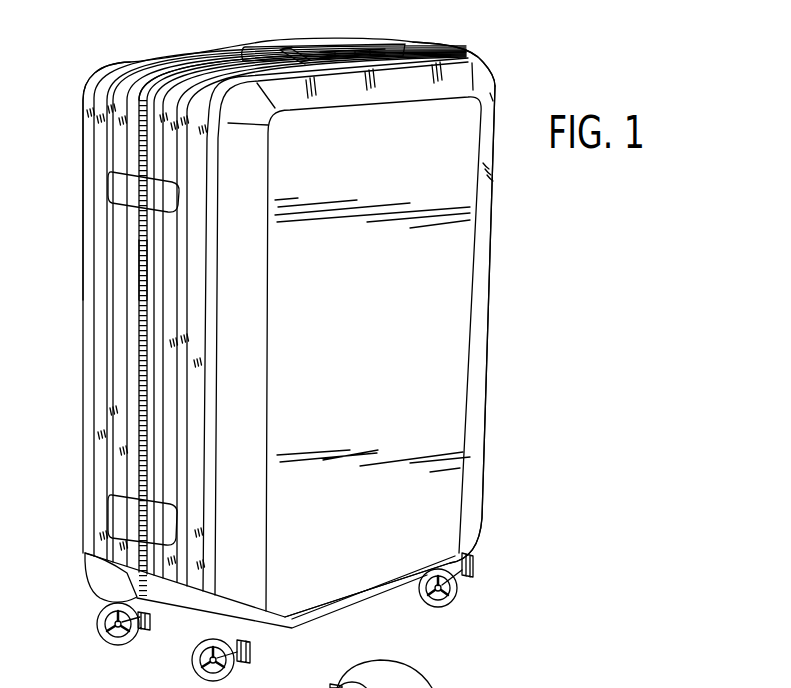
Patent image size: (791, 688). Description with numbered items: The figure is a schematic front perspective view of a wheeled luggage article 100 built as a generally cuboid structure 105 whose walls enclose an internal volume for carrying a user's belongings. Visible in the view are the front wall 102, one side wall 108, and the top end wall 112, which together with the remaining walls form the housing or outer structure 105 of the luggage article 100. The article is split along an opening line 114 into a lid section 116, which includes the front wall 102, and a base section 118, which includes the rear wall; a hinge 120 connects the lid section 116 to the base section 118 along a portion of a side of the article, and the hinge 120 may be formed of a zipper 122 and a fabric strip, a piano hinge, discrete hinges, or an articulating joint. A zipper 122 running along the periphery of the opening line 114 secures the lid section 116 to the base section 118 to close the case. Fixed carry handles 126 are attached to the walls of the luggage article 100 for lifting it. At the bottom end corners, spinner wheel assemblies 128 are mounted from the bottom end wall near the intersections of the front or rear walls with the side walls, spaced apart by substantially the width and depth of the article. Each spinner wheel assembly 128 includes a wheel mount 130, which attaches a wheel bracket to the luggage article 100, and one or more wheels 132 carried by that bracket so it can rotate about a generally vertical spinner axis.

The wheeled luggage article 100 is at (589, 309).
The front wall 102 is at (412, 363).
The cuboid structure 105 is at (480, 62).
The side wall 108 is at (110, 318).
The top end wall 112 is at (147, 66).
The opening line 114 is at (148, 90).
The lid section 116 is at (476, 451).
The base section 118 is at (90, 84).
The hinge 120 is at (118, 192).
The zipper 122 is at (145, 270).
The fixed carry handles 126 is at (268, 43).
The spinner wheel assembly 128 is at (195, 676).
The wheel mount 130 is at (98, 583).
The wheel 132 is at (240, 668).